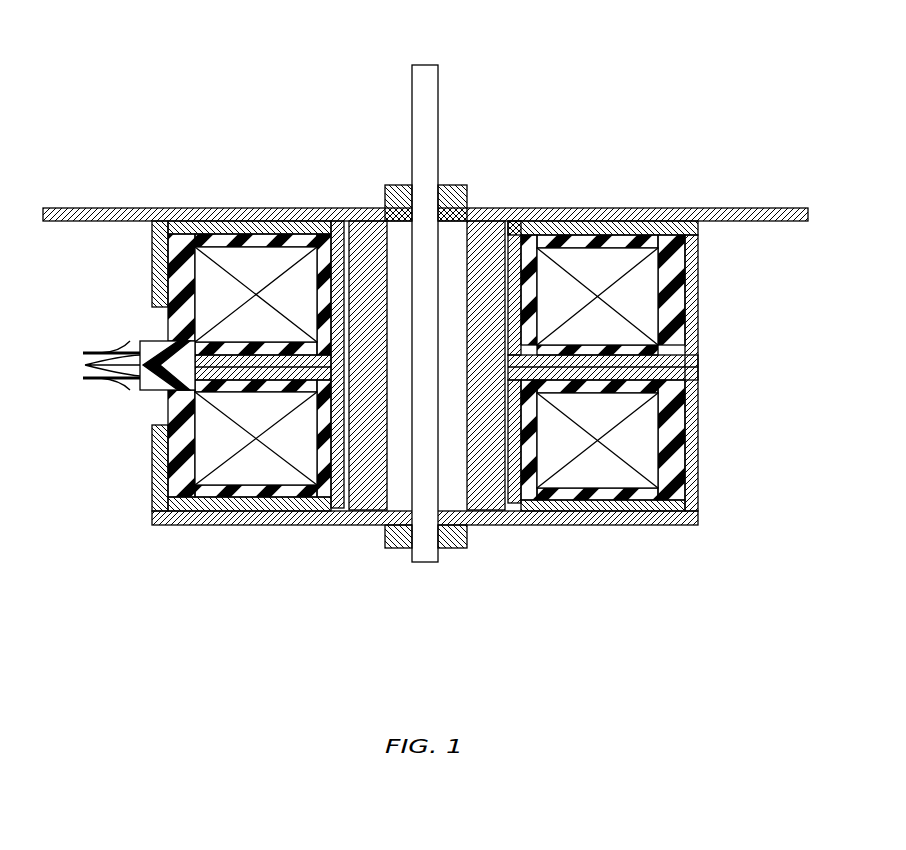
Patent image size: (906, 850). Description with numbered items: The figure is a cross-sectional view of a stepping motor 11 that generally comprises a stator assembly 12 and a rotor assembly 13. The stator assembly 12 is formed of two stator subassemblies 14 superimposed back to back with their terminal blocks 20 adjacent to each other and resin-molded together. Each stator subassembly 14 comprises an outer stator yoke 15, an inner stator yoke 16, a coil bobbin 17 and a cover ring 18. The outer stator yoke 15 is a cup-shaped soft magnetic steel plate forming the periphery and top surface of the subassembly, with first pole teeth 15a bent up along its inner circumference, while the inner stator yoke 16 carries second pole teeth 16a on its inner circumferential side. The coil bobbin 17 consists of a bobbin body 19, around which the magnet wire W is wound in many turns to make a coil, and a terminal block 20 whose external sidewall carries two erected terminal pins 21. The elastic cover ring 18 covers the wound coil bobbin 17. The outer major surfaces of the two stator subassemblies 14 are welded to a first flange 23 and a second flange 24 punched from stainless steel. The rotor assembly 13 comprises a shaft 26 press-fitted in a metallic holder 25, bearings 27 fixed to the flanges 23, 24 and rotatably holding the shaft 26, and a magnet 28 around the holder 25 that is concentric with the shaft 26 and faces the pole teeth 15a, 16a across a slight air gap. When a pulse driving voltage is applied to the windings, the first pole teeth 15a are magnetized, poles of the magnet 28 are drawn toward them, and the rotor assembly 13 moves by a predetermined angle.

The stepping motor 11 is at (273, 146).
The stator assembly 12 is at (672, 340).
The rotor assembly 13 is at (507, 618).
The stator subassembly 14 is at (653, 334).
The outer stator yoke 15 is at (700, 233).
The first pole teeth 15a is at (509, 226).
The inner stator yoke 16 is at (243, 360).
The second pole teeth 16a is at (336, 265).
The coil bobbin 17 is at (607, 262).
The cover ring 18 is at (700, 266).
The bobbin body 19 is at (645, 247).
The terminal block 20 is at (85, 365).
The terminal pins 21 is at (90, 352).
The first flange 23 is at (591, 208).
The second flange 24 is at (550, 525).
The holder 25 is at (407, 478).
The shaft 26 is at (425, 542).
The bearings 27 is at (386, 193).
The magnet 28 is at (485, 458).
The magnet wire W is at (248, 458).